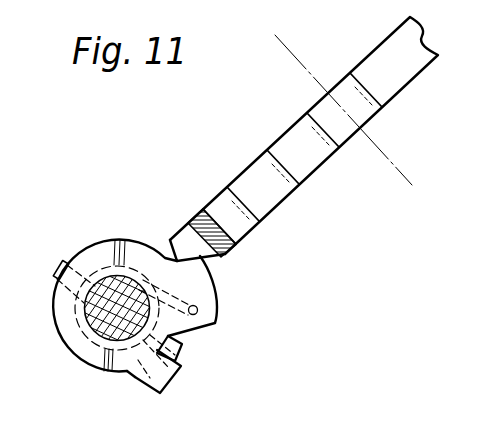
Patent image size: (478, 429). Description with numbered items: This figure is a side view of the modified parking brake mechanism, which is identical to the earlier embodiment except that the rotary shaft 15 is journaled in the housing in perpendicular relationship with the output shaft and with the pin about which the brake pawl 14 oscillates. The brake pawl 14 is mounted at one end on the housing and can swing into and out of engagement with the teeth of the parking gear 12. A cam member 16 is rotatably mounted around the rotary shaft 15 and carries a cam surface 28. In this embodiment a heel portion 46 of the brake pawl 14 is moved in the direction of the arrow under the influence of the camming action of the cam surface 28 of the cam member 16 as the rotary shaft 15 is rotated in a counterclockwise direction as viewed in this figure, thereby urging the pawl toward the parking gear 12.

The parking gear 12 is at (303, 167).
The brake pawl 14 is at (244, 245).
The heel portion 46 is at (173, 236).
The cam member 16 is at (84, 251).
The rotary shaft 15 is at (98, 339).
The cam surface 28 is at (217, 290).